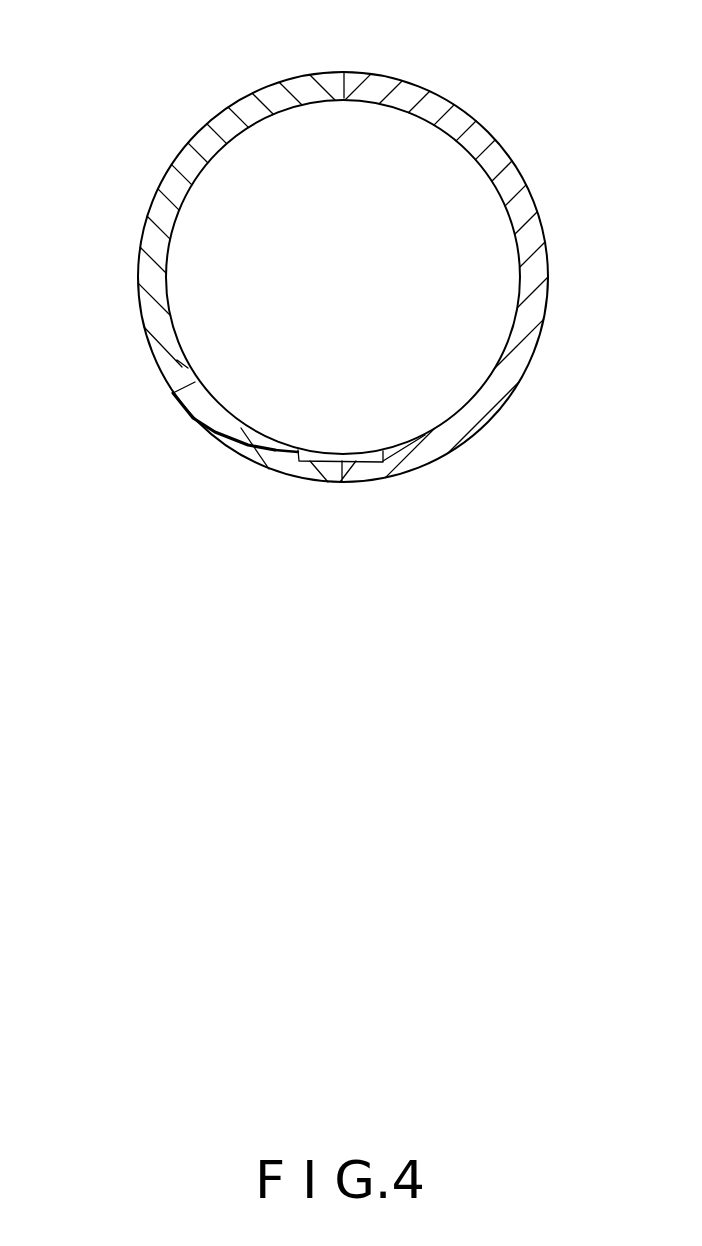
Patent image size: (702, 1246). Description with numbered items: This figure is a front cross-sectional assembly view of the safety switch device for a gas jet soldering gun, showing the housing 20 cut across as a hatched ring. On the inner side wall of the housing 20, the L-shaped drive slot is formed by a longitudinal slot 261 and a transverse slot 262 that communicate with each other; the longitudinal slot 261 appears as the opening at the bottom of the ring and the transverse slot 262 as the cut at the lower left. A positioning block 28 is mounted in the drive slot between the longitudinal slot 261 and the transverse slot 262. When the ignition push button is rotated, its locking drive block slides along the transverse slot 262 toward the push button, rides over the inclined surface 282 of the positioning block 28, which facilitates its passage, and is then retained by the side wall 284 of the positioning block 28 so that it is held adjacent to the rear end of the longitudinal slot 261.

The housing 20 is at (455, 123).
The longitudinal slot 261 is at (330, 460).
The transverse slot 262 is at (173, 394).
The positioning block 28 is at (288, 475).
The inclined surface 282 is at (270, 436).
The side wall 284 is at (316, 445).